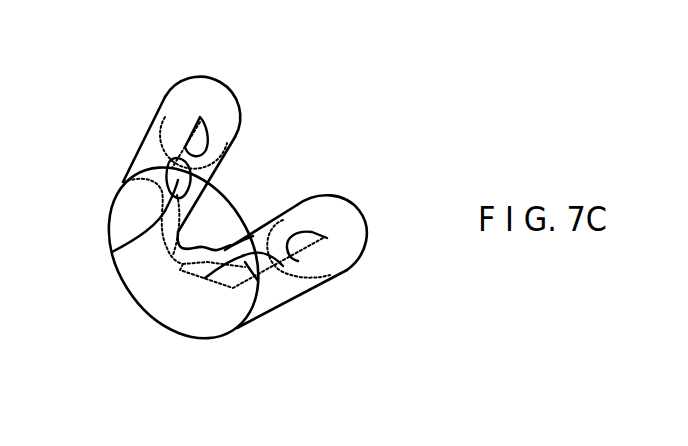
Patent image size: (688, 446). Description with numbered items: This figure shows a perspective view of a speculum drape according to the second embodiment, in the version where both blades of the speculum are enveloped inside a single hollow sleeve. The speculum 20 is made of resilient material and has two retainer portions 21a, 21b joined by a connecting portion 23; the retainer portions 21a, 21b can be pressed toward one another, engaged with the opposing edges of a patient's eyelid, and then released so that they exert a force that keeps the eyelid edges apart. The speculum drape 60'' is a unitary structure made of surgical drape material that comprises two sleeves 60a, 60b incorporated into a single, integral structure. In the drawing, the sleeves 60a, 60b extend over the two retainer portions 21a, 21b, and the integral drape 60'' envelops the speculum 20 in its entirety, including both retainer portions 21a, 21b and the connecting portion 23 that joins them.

The speculum 20 is at (217, 283).
The retainer portion 21a is at (205, 278).
The retainer portion 21b is at (112, 252).
The connecting portion 23 is at (213, 275).
The speculum drape 60'' is at (302, 171).
The sleeve 60a is at (238, 135).
The sleeve 60b is at (365, 257).